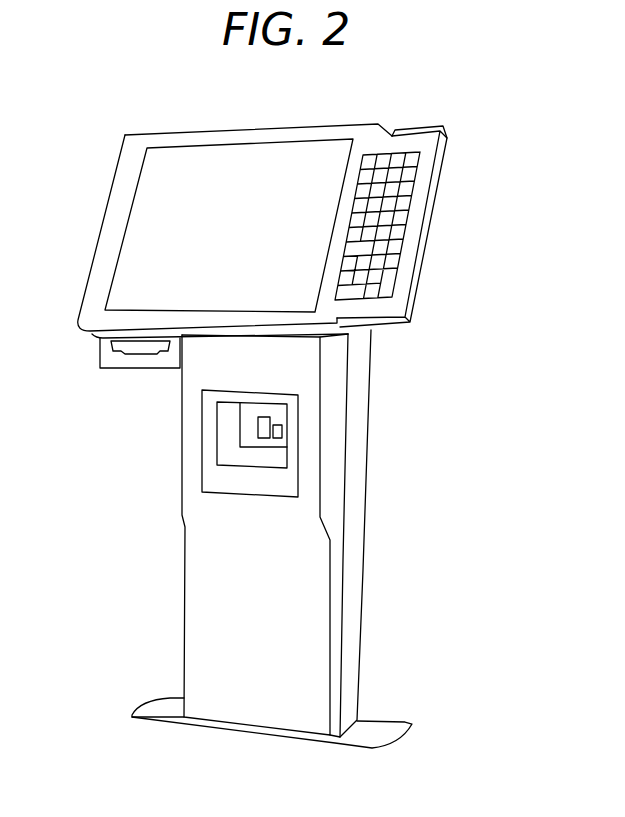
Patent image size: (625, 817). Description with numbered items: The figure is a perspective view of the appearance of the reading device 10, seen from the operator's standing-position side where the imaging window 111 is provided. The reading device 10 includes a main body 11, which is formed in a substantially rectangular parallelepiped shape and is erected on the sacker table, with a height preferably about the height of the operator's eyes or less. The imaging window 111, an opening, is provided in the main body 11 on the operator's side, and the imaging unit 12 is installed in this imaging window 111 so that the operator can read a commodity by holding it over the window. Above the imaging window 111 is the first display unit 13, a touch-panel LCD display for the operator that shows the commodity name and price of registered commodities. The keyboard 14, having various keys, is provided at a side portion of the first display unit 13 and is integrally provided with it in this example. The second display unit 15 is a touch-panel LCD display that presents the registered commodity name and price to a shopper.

The reading device 10 is at (478, 113).
The main body 11 is at (370, 385).
The imaging unit 12 is at (282, 432).
The first display unit 13 is at (207, 165).
The keyboard 14 is at (397, 173).
The second display unit 15 is at (97, 362).
The imaging window 111 is at (202, 422).